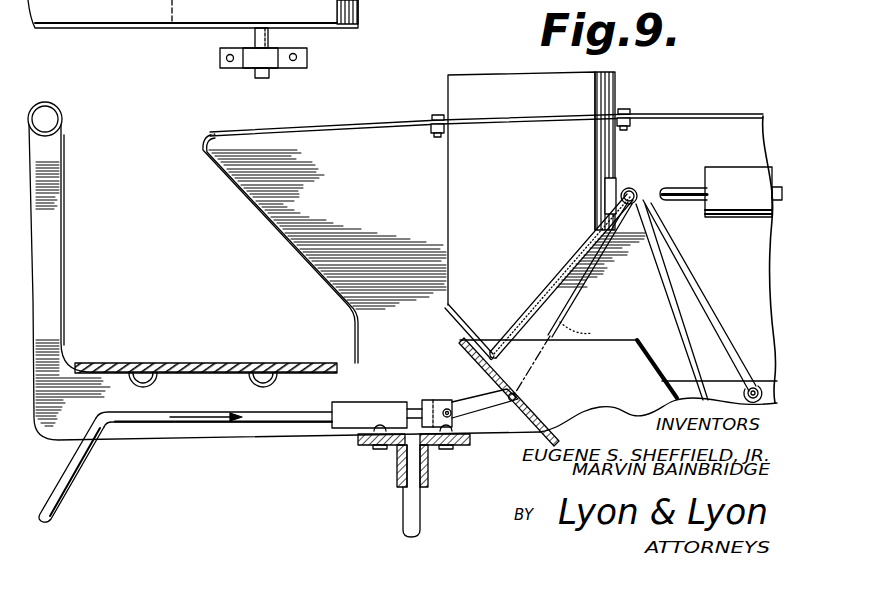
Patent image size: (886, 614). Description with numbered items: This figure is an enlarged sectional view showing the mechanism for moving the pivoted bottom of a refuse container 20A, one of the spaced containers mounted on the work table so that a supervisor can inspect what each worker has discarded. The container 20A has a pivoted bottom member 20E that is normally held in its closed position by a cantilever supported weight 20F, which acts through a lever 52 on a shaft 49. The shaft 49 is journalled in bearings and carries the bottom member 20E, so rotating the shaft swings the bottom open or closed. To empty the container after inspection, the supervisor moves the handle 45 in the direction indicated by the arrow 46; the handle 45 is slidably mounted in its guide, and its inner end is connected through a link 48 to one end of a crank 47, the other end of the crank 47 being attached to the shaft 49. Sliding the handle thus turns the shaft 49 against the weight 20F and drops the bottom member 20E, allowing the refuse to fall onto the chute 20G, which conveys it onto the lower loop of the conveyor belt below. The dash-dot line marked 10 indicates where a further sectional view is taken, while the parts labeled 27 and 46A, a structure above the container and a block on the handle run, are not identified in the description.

The housing 27 is at (88, 15).
The section line 10- 10 is at (12, 392).
The refuse container 20A is at (440, 96).
The shaft 49 is at (631, 187).
The pivoted bottom member 20E is at (530, 310).
The crank 47 is at (568, 305).
The lever 52 is at (677, 200).
The weight 20F is at (733, 212).
The chute 20G is at (506, 410).
The arrow 46 is at (217, 424).
The handle 45 is at (58, 482).
The coupling block 46A is at (378, 402).
The link 48 is at (473, 404).